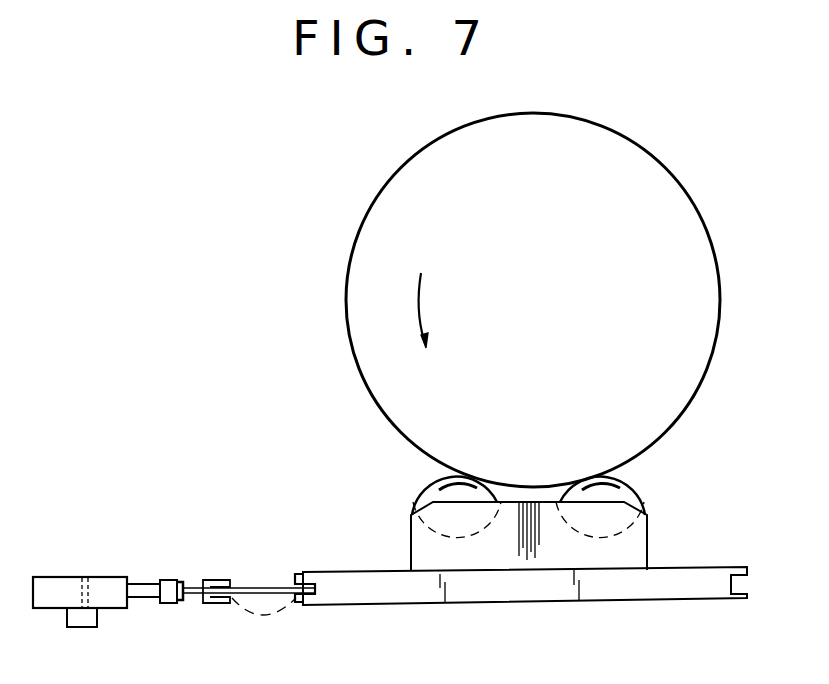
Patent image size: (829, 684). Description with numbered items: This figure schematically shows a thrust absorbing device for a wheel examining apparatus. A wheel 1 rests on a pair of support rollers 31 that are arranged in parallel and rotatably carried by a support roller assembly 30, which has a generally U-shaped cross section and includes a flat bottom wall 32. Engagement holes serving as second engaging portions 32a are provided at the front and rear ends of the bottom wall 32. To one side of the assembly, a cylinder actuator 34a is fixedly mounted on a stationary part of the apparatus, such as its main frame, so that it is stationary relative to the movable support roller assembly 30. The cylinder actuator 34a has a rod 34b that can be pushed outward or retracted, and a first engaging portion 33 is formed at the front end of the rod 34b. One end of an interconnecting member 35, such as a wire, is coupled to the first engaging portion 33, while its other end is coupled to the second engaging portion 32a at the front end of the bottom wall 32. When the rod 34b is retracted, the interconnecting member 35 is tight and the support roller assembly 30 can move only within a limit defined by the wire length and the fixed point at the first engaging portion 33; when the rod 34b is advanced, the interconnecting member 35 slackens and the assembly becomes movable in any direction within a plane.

The wheel 1 is at (682, 184).
The support roller assembly 30 is at (504, 552).
The support rollers 31 is at (418, 492).
The bottom wall 32 is at (606, 589).
The second engaging portion 32a is at (299, 574).
The first engaging portion 33 is at (183, 579).
The cylinder actuator 34a is at (58, 577).
The rod 34b is at (139, 585).
The interconnecting member 35 is at (250, 588).